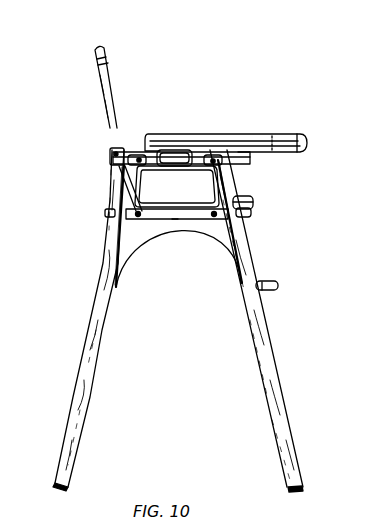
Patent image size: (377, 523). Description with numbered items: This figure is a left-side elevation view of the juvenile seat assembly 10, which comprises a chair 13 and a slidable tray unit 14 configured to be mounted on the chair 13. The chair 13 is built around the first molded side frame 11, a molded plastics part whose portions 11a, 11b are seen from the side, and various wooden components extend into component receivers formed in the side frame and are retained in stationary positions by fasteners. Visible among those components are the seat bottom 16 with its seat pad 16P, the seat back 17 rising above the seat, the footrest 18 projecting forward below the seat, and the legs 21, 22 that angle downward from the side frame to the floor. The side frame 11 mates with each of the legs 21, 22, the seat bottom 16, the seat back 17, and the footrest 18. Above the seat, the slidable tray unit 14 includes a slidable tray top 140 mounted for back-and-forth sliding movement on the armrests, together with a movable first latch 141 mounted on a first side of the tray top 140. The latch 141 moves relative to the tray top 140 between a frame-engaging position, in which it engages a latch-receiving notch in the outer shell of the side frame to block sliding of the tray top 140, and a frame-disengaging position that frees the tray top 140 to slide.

The juvenile seat assembly 10 is at (278, 85).
The first molded side frame 11 is at (152, 250).
The left side rail of seat frame 11a is at (117, 167).
The right side rail of seat frame 11b is at (213, 232).
The chair 13 is at (92, 128).
The slidable tray unit 14 is at (292, 124).
The slidable tray top 140 is at (217, 136).
The movable first latch 141 is at (172, 163).
The seat bottom 16 is at (266, 210).
The seat pad 16P is at (244, 200).
The seat back 17 is at (124, 64).
The footrest 18 is at (290, 285).
The leg 21 is at (64, 398).
The leg 22 is at (302, 407).